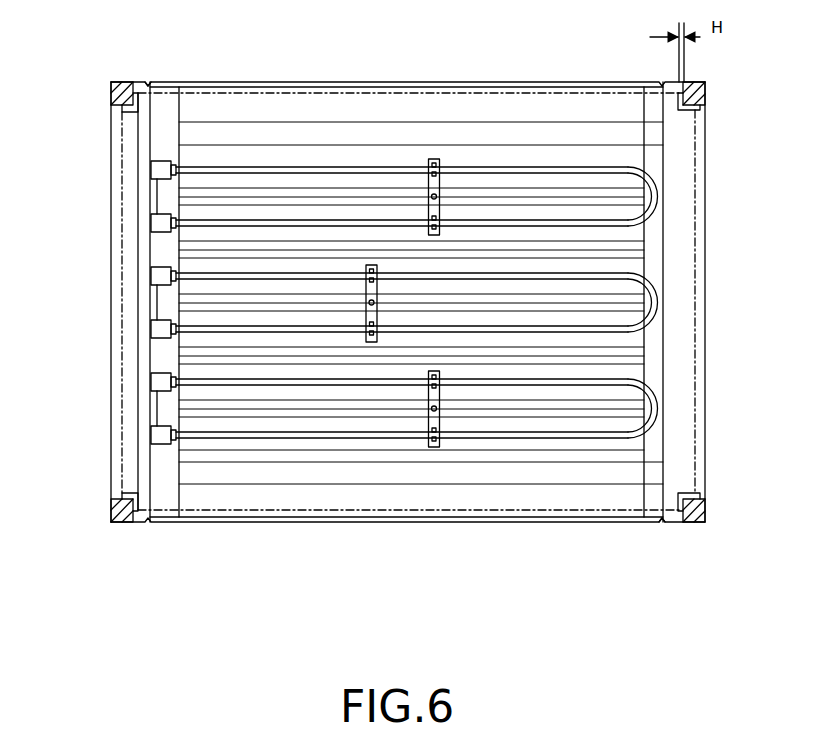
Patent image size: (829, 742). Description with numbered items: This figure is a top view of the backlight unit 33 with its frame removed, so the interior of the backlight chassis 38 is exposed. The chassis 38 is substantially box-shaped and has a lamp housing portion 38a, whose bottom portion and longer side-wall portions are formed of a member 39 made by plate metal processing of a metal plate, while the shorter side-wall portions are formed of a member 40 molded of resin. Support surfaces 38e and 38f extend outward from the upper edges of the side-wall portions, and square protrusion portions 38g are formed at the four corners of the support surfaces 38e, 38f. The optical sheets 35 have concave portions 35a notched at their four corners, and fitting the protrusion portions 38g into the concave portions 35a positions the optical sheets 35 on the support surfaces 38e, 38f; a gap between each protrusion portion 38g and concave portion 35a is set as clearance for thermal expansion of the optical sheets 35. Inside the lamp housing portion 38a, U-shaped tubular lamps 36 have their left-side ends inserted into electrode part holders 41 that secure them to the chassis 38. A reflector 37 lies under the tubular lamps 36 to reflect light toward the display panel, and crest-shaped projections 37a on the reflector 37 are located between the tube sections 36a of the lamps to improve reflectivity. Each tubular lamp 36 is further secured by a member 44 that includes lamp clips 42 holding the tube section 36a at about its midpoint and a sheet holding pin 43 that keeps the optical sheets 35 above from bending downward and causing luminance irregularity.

The backlight unit 33 is at (181, 540).
The optical sheets 35 is at (122, 188).
The concave portions 35a is at (130, 108).
The tubular lamps 36 is at (381, 165).
The tube sections 36a is at (472, 162).
The reflector 37 is at (179, 242).
The projections 37a is at (187, 298).
The backlight chassis 38 is at (583, 536).
The lamp housing portion 38a is at (652, 266).
The support surface 38e is at (183, 81).
The support surface 38f is at (117, 405).
The protrusion portions 38g is at (111, 88).
The member 39 is at (500, 524).
The member 40 is at (111, 364).
The electrode part holders 41 is at (160, 170).
The lamp clips 42 is at (371, 262).
The sheet holding pin 43 is at (371, 306).
The member 44 is at (360, 311).